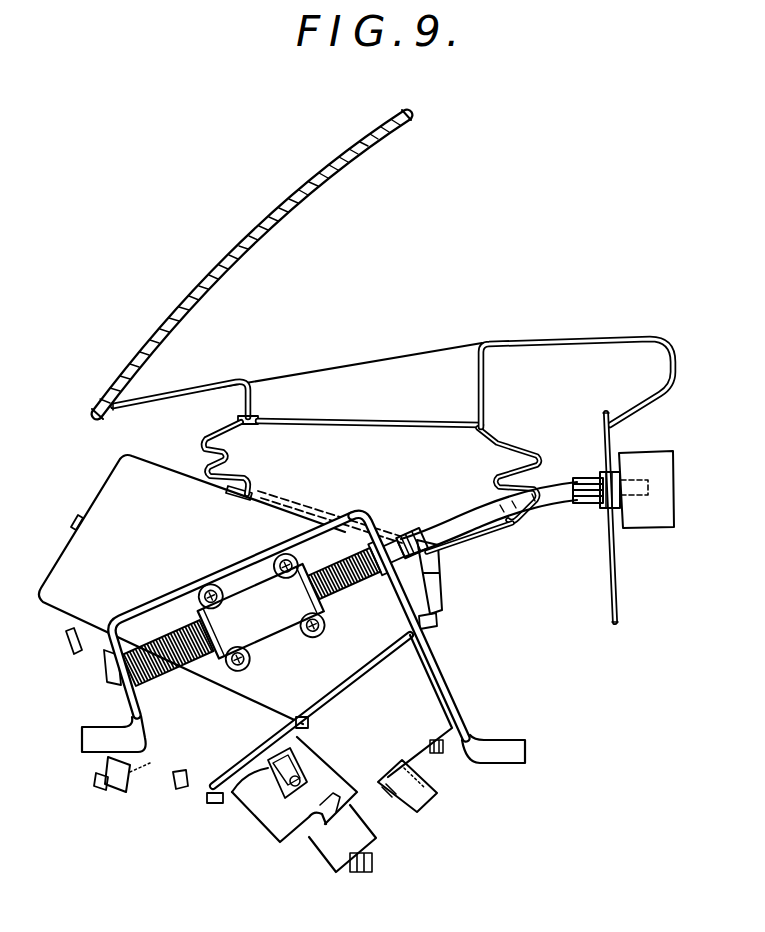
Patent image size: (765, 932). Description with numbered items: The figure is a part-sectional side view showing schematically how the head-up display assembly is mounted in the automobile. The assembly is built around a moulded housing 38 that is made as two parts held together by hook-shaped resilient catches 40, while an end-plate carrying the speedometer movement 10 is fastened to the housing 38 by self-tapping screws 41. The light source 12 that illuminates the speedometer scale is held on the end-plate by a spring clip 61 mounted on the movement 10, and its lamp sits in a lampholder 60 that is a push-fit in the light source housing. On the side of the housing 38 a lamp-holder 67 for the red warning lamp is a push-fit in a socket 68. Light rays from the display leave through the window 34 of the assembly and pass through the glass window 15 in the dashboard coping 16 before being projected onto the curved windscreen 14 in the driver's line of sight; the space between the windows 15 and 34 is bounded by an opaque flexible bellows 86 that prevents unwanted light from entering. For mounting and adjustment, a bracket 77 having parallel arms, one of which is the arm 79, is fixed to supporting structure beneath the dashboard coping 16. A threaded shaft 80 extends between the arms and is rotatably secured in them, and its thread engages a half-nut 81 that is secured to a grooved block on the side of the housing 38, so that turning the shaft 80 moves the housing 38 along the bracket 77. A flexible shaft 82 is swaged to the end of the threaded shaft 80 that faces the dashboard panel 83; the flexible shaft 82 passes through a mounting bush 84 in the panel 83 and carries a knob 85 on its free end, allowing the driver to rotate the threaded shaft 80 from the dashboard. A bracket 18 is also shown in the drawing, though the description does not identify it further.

The movement 10 is at (383, 732).
The light source 12 is at (270, 820).
The windscreen 14 is at (177, 308).
The glass window 15 is at (400, 420).
The dashboard coping 16 is at (563, 333).
The bracket 18 is at (148, 704).
The window 34 is at (300, 507).
The housing 38 is at (50, 566).
The resilient catches 40 is at (77, 517).
The self-tapping screws 41 is at (440, 625).
The lampholder 60 is at (362, 868).
The spring clip 61 is at (372, 813).
The lamp-holder 67 is at (103, 783).
The socket 68 is at (148, 775).
The bracket 77 is at (153, 596).
The arm 79 is at (443, 680).
The threaded shaft 80 is at (352, 592).
The half-nut 81 is at (263, 623).
The flexible shaft 82 is at (572, 502).
The dashboard panel 83 is at (618, 576).
The mounting bush 84 is at (583, 474).
The knob 85 is at (655, 450).
The bellows 86 is at (503, 447).